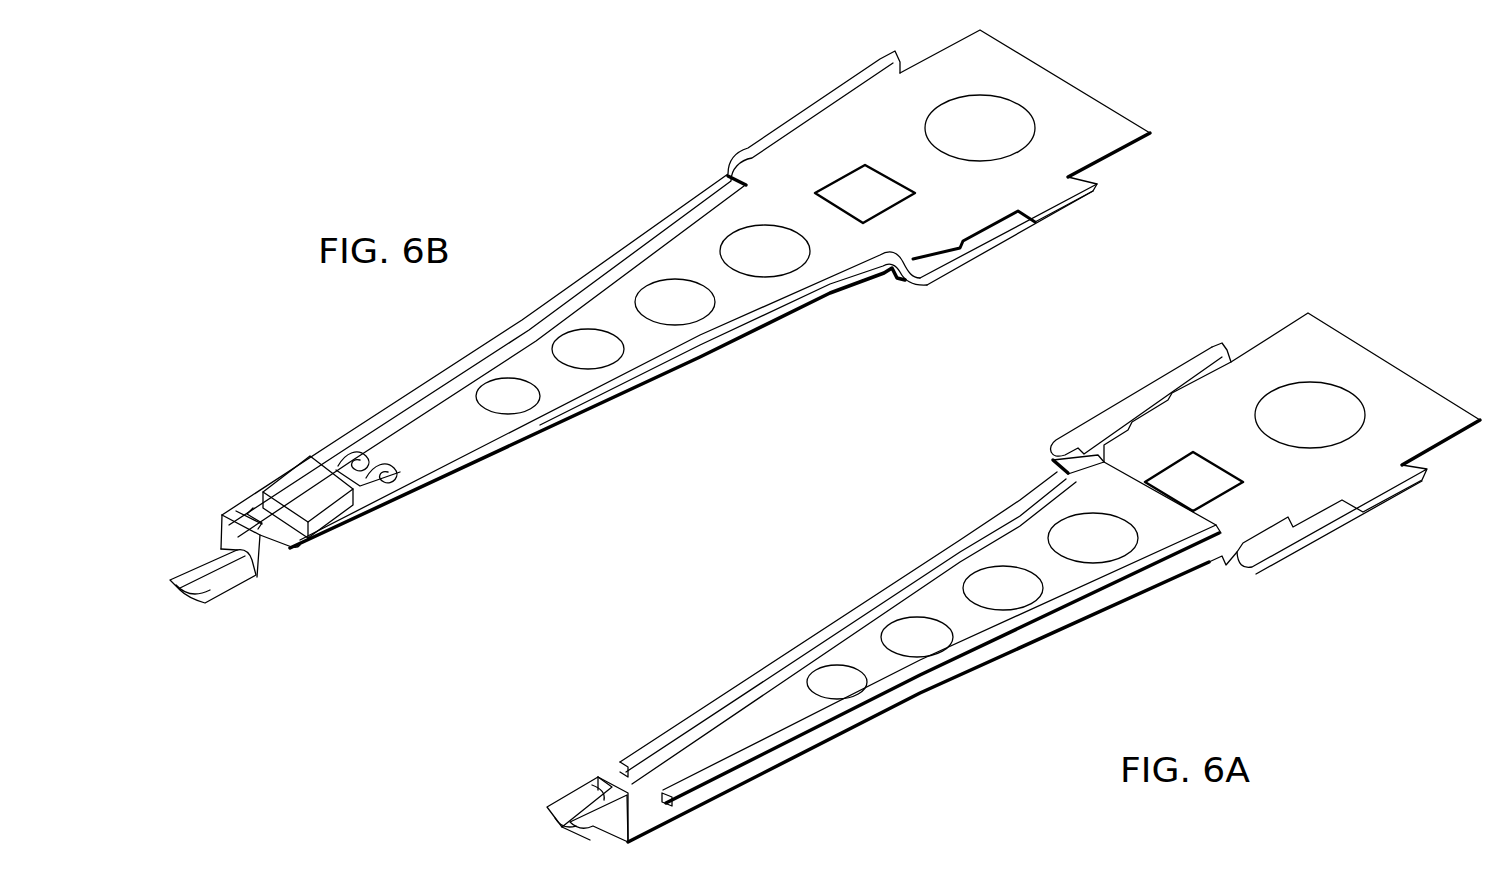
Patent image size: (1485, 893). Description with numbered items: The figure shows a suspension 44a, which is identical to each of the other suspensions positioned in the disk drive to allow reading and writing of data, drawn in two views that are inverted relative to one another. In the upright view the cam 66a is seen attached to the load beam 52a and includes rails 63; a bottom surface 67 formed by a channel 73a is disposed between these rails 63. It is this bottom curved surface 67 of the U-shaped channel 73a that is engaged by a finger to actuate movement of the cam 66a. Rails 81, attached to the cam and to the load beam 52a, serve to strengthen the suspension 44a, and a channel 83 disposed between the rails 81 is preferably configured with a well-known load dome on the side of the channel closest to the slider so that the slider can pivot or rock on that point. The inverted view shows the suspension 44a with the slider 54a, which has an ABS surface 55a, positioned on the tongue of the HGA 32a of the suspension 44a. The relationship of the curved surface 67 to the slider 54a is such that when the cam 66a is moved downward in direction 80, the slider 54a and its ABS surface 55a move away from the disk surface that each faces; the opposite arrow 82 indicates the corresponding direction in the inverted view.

In FIG. 6B, the suspension 44a is at (646, 198).
In FIG. 6A, the suspension 44a is at (965, 496).
In FIG. 6B, the load beam 52a is at (1090, 103).
In FIG. 6A, the load beam 52a is at (1373, 366).
In FIG. 6B, the HGA 32a is at (294, 566).
In FIG. 6B, the ABS surface 55a is at (302, 478).
In FIG. 6B, the slider 54a is at (333, 500).
In FIG. 6B, the cam 66a is at (186, 546).
In FIG. 6B, the bottom curved surface 67 is at (214, 578).
In FIG. 6A, the bottom curved surface 67 is at (572, 834).
In FIG. 6B, the direction 80 is at (140, 628).
In FIG. 6A, the rails 81 is at (632, 768).
In FIG. 6A, the channel 83 is at (708, 740).
In FIG. 6A, the rails 63 is at (570, 792).
In FIG. 6A, the U-shaped channel 73a is at (558, 822).
In FIG. 6A, the direction arrow 82 is at (508, 752).